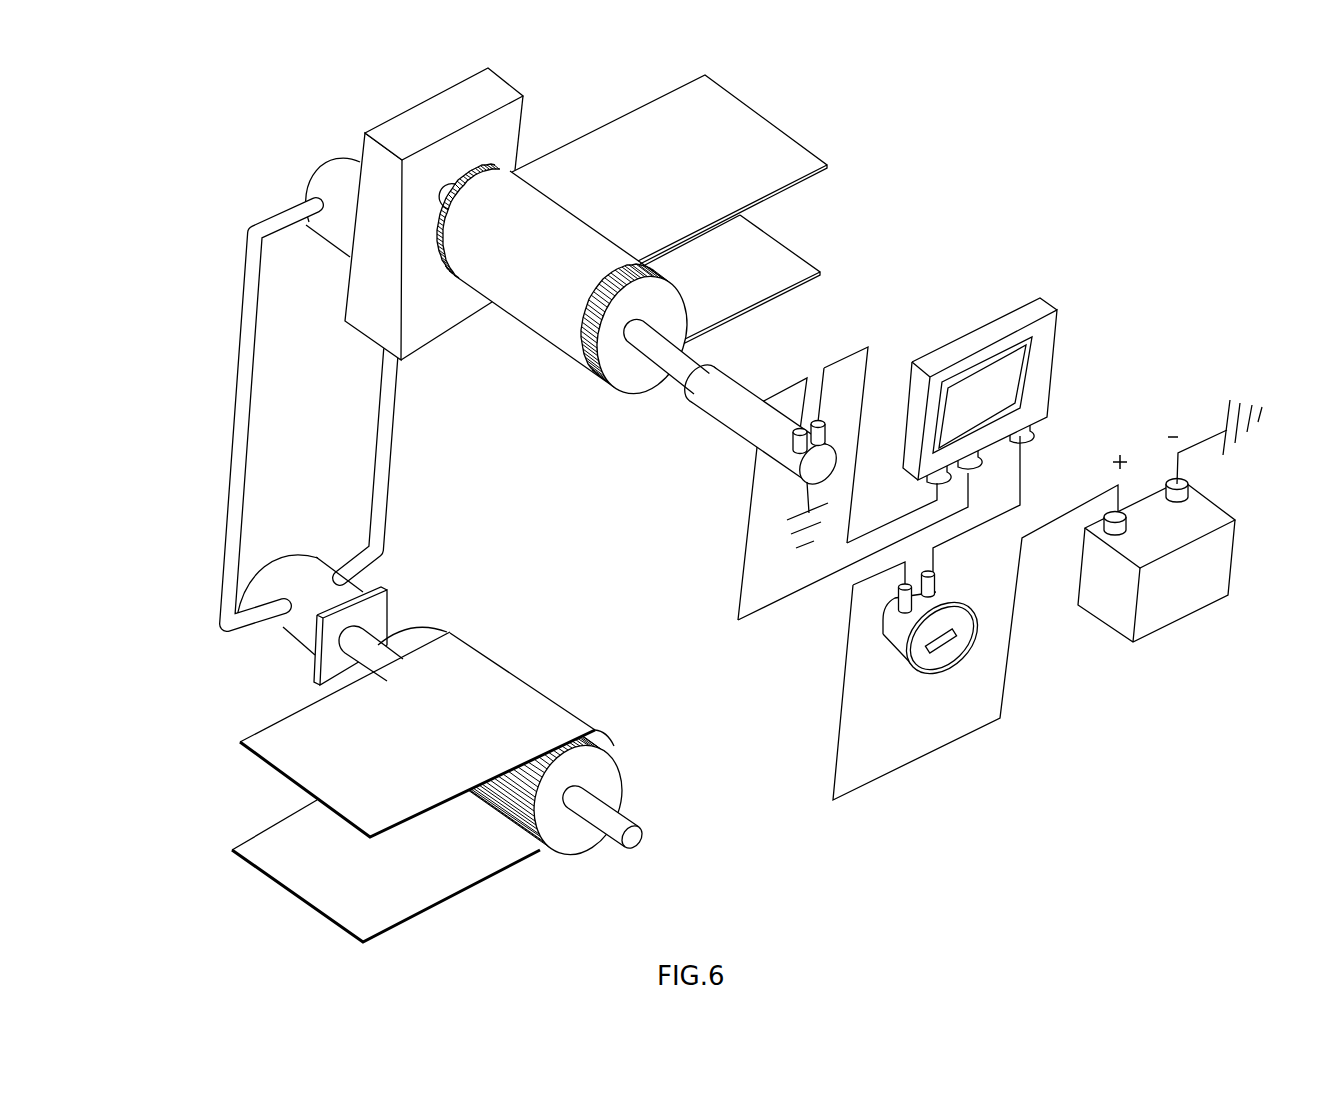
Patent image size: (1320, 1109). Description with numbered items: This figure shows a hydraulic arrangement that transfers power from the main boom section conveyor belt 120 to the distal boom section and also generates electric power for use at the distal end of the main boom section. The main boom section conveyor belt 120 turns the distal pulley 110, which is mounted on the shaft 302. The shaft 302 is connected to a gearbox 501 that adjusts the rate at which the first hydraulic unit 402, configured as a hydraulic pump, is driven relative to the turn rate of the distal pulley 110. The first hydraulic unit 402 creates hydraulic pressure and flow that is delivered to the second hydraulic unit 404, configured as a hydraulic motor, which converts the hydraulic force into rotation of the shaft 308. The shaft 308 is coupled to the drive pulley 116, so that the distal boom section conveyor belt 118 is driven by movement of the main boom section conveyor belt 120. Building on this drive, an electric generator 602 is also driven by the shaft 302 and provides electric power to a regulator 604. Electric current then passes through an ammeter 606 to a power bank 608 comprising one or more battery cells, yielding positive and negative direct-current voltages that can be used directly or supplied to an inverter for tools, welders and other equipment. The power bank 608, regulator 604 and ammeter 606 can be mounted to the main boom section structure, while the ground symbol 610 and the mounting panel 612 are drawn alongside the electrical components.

The distal pulley 110 is at (597, 383).
The drive pulley 116 is at (565, 862).
The distal boom section conveyor belt 118 is at (283, 722).
The main boom section conveyor belt 120 is at (812, 162).
The shaft 302 is at (657, 370).
The shaft 308 is at (642, 848).
The first hydraulic unit 402 is at (320, 157).
The second hydraulic unit 404 is at (390, 582).
The gearbox 501 is at (399, 114).
The electric generator 602 is at (717, 430).
The regulator 604 is at (1012, 305).
The ammeter 606 is at (916, 670).
The power bank 608 is at (1182, 618).
The ground 610 is at (1203, 437).
The circuit panel 612 is at (1069, 507).